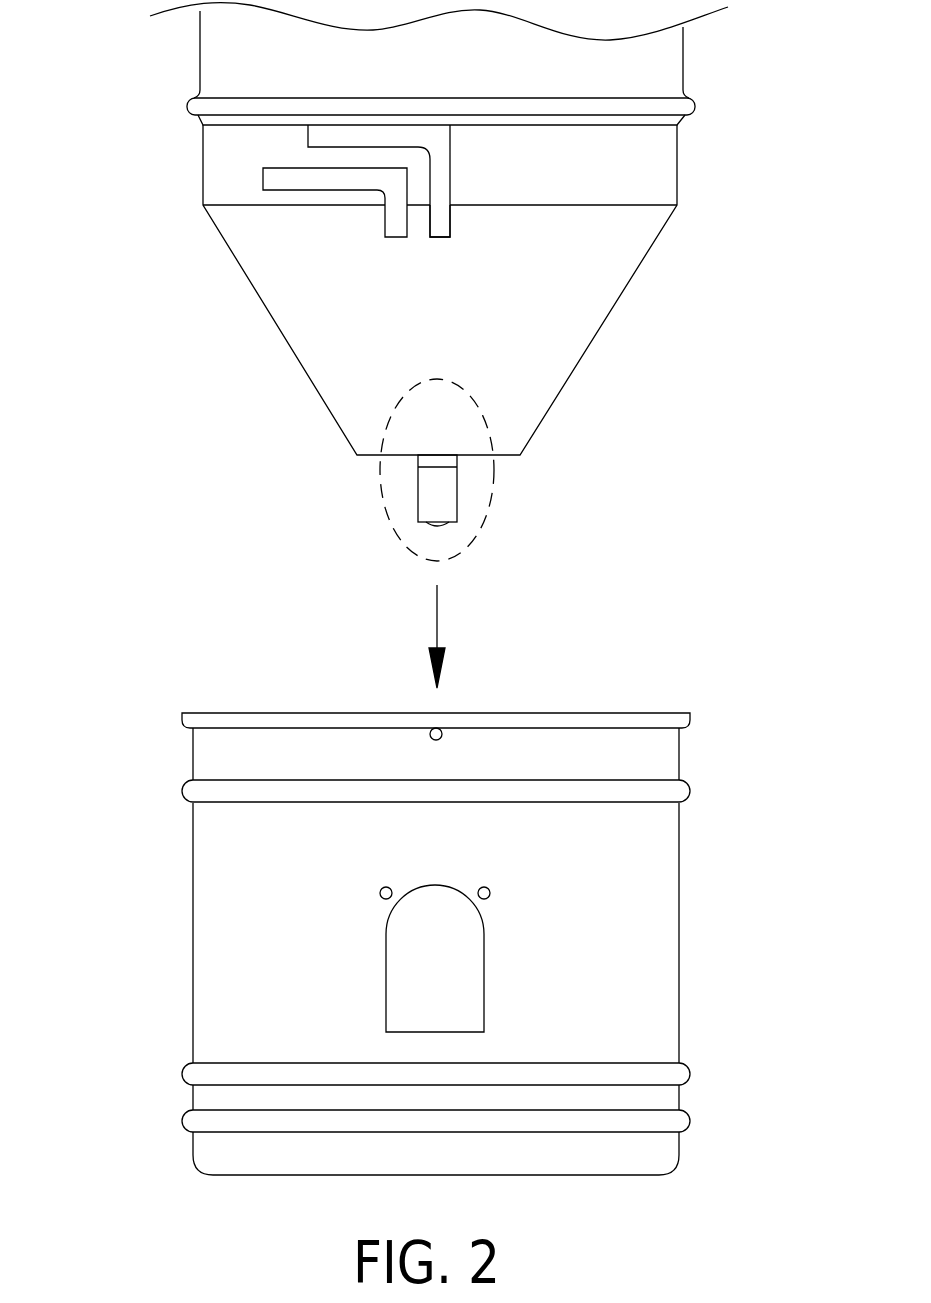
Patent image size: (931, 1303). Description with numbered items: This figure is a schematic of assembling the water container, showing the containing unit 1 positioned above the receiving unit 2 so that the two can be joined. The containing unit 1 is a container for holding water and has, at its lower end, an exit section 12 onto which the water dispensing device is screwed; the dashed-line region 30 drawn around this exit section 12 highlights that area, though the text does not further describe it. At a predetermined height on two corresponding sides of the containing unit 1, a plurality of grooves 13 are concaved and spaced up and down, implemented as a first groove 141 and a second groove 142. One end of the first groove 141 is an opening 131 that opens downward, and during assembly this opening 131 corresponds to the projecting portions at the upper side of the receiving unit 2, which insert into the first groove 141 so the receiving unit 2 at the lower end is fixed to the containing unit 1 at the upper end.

The containing unit 1 is at (547, 320).
The receiving unit 2 is at (647, 898).
The exit section 12 is at (448, 460).
The grooves 13 is at (165, 370).
The enlarged region 30 is at (437, 448).
The opening 131 is at (442, 225).
The first groove 141 is at (370, 138).
The second groove 142 is at (302, 178).